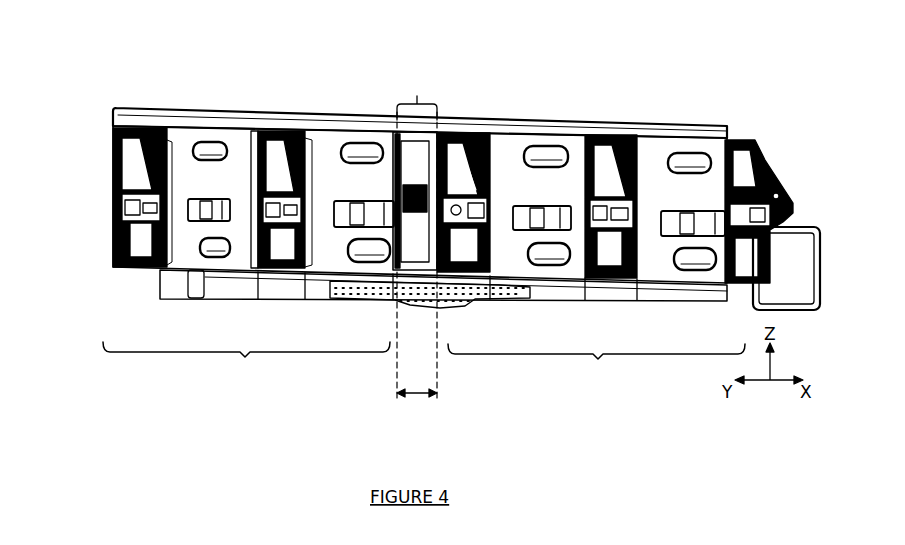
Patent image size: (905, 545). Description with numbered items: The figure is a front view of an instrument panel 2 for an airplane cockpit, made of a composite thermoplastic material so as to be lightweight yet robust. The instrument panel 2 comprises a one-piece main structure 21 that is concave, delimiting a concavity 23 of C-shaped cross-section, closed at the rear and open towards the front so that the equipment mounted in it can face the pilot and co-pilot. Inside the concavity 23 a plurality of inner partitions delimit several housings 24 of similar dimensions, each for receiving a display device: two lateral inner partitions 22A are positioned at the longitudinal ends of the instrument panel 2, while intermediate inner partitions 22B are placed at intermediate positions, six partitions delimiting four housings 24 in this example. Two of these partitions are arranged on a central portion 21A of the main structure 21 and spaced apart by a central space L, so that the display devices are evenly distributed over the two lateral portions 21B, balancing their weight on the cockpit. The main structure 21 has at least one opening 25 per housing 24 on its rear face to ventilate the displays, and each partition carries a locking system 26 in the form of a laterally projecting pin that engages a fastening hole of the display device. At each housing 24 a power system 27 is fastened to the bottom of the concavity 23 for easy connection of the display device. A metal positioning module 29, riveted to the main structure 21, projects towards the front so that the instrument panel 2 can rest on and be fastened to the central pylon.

The instrument panel 2 is at (162, 89).
The main structure 21 is at (205, 108).
The central portion 21A is at (415, 252).
The lateral portions 21B is at (424, 370).
The lateral inner partitions 22A is at (118, 176).
The intermediate inner partitions 22B is at (266, 280).
The concavity 23 is at (178, 253).
The housings 24 is at (314, 146).
The opening 25 is at (693, 163).
The locking system 26 is at (120, 206).
The power system 27 is at (216, 222).
The positioning module 29 is at (445, 306).